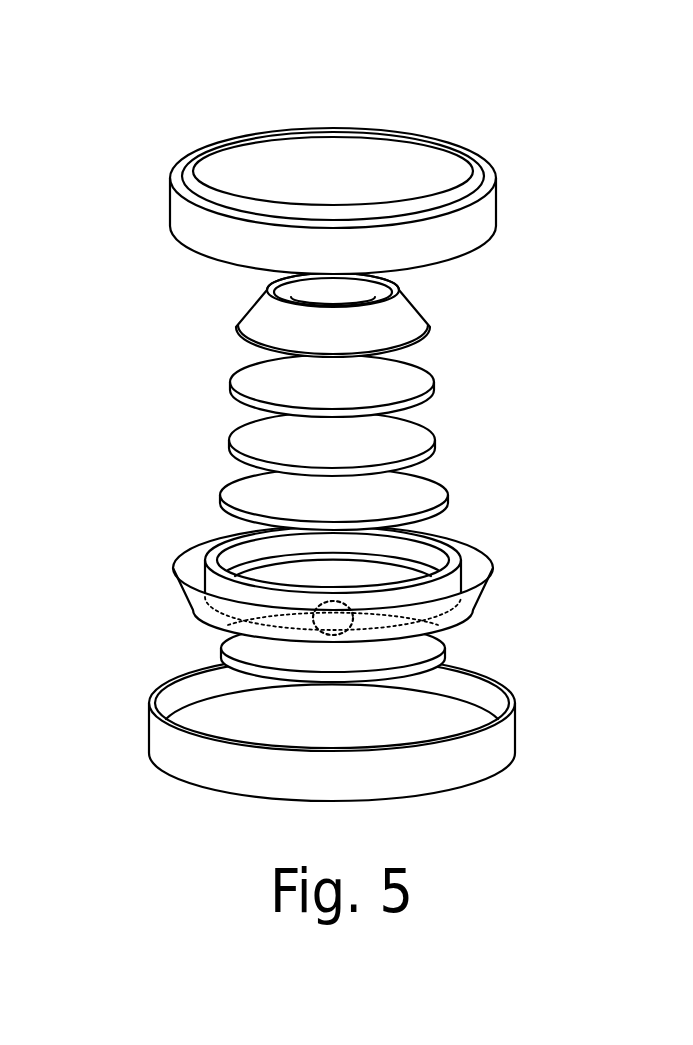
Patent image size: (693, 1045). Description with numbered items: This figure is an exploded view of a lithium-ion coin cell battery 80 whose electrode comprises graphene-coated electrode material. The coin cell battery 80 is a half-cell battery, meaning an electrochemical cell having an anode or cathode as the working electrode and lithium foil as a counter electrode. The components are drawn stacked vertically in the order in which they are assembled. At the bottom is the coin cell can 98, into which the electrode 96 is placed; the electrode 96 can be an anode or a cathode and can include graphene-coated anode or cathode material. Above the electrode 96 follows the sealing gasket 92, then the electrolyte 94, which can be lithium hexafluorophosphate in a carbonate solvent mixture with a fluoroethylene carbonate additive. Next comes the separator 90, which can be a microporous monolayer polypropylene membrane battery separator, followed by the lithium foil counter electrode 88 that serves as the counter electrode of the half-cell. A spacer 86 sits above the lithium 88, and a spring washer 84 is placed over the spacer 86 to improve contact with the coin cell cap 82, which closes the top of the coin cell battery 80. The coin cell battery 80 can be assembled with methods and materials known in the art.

The lithium-ion coin cell battery 80 is at (116, 133).
The coin cell cap 82 is at (472, 226).
The spring washer 84 is at (400, 323).
The spacer 86 is at (403, 380).
The lithium foil counter electrode 88 is at (410, 441).
The separator 90 is at (416, 488).
The gasket 92 is at (393, 584).
The electrolyte 94 is at (340, 622).
The electrode 96 is at (440, 640).
The coin cell can 98 is at (500, 738).